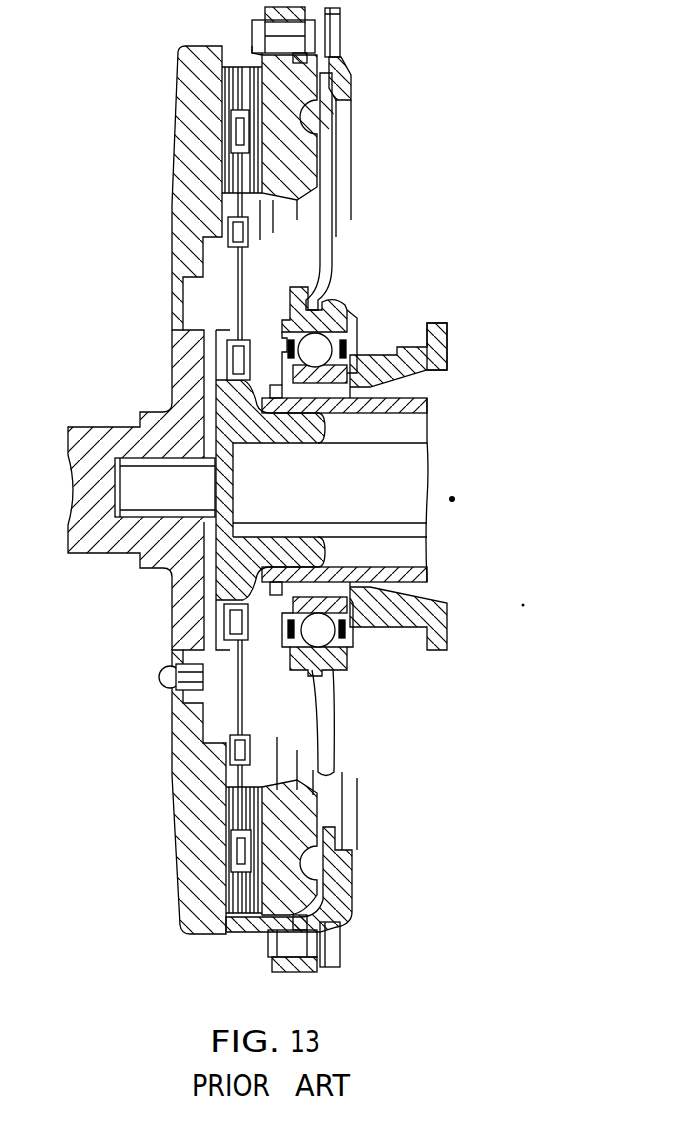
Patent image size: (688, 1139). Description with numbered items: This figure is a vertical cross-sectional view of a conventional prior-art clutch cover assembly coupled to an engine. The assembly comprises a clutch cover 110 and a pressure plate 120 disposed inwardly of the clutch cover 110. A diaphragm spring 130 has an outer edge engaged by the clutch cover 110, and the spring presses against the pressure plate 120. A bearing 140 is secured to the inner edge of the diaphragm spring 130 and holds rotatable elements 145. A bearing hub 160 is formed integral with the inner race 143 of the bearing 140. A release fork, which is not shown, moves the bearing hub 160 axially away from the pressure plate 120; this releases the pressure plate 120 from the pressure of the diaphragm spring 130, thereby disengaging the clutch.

The clutch cover 110 is at (350, 72).
The pressure plate 120 is at (330, 88).
The diaphragm spring 130 is at (330, 247).
The bearing 140 is at (358, 322).
The inner race 143 is at (380, 347).
The rotatable elements 145 is at (315, 352).
The bearing hub 160 is at (440, 352).